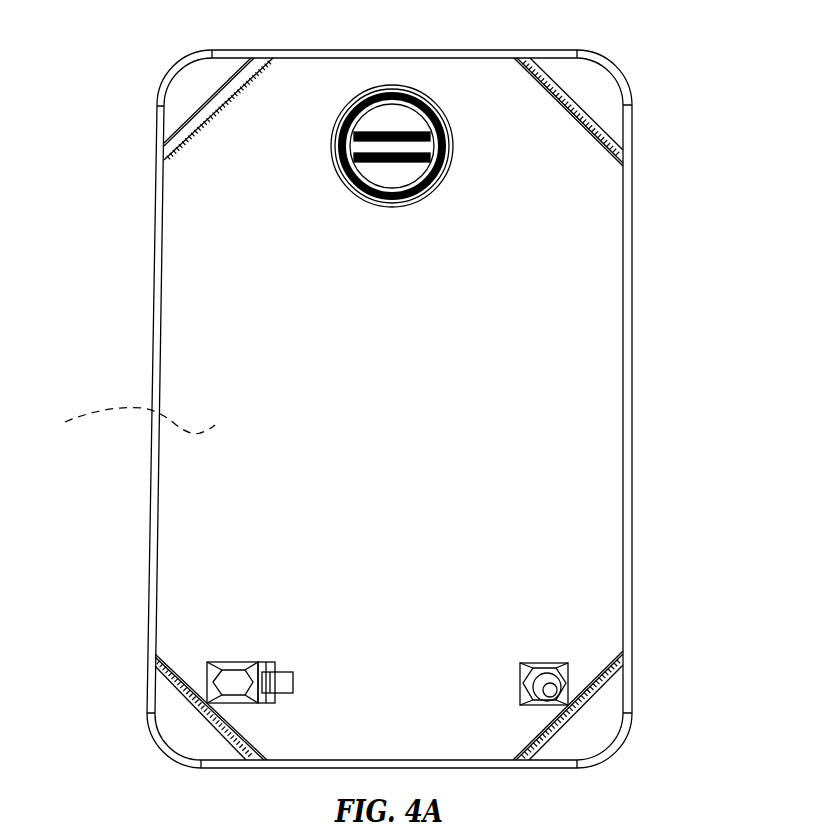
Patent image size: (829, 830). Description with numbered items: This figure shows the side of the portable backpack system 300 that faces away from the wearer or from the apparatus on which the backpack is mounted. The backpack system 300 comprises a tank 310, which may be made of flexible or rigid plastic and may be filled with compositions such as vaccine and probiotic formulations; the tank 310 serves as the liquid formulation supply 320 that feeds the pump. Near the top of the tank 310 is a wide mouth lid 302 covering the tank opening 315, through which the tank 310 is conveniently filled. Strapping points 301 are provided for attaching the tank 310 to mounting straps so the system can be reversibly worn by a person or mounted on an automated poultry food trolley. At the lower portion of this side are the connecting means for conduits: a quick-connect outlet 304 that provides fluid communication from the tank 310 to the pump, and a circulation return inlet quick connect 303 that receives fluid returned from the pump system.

The portable backpack system 300 is at (127, 110).
The strapping points 301 is at (218, 107).
The wide mouth lid 302 is at (373, 163).
The tank opening 315 is at (416, 202).
The tank 310 is at (448, 458).
The liquid formulation supply 320 is at (117, 422).
The quick-connect outlet 304 is at (235, 673).
The circulation return inlet quick connect 303 is at (543, 672).